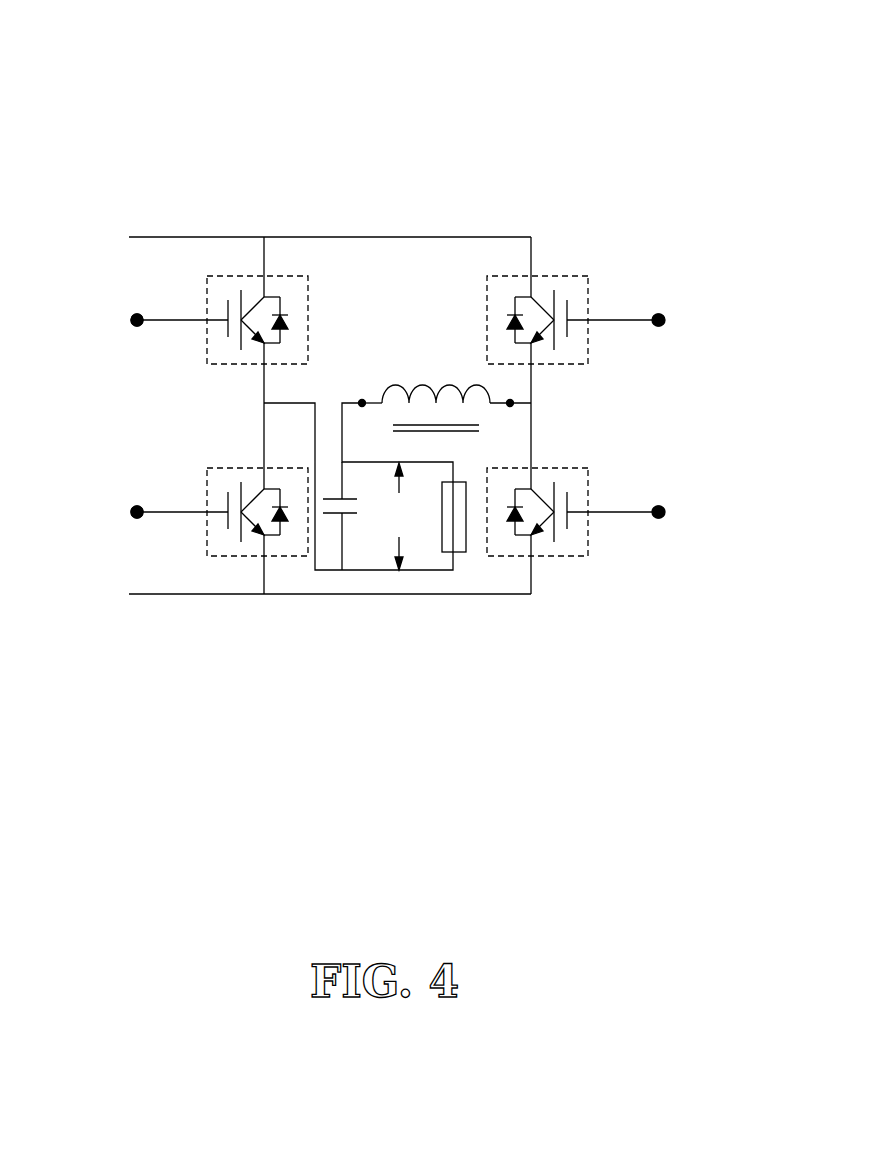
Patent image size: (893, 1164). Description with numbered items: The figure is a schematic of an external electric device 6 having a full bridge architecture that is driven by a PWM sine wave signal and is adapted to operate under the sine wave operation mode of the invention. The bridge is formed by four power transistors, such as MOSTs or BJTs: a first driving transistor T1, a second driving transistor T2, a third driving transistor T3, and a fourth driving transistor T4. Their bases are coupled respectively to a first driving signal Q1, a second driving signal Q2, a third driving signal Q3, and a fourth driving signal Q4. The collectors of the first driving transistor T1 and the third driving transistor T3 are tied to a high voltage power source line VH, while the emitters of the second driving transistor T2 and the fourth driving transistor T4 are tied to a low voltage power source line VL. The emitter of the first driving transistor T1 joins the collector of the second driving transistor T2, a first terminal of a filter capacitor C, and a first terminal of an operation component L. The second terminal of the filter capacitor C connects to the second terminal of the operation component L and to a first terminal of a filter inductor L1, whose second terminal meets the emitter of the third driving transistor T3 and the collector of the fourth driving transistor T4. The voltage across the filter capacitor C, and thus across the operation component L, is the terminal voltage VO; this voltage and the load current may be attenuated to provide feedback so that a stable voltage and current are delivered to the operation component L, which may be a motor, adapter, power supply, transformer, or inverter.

The external electric device 6 is at (704, 116).
The first driving transistor T1 is at (233, 274).
The second driving transistor T2 is at (233, 466).
The third driving transistor T3 is at (567, 274).
The fourth driving transistor T4 is at (568, 466).
The filter inductor L1 is at (436, 394).
The filter capacitor C is at (342, 516).
The operation component L is at (454, 517).
The terminal voltage VO is at (400, 516).
The high voltage power source line VH is at (307, 237).
The low voltage power source line VL is at (307, 594).
The first driving signal Q1 is at (114, 321).
The second driving signal Q2 is at (114, 513).
The third driving signal Q3 is at (685, 321).
The fourth driving signal Q4 is at (685, 513).